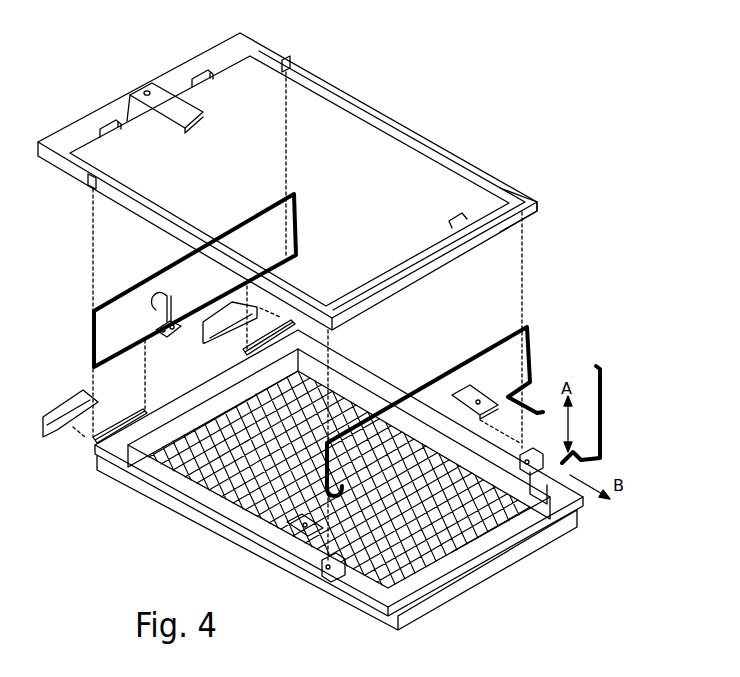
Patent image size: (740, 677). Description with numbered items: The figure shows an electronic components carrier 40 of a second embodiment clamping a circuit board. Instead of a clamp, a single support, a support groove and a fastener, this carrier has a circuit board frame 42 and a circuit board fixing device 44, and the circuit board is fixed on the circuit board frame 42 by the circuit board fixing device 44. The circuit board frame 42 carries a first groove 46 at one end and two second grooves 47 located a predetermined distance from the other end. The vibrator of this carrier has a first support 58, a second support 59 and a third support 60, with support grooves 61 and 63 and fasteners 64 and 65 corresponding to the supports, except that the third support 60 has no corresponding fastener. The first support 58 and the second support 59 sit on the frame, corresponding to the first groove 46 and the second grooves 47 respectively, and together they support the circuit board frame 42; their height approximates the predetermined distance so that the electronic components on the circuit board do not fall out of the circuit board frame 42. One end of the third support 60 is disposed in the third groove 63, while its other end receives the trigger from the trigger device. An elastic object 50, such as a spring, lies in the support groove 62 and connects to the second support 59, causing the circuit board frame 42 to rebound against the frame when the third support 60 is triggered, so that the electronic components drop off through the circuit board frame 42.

The electronic components carrier 40 is at (594, 99).
The circuit board frame 42 is at (460, 152).
The circuit board fixing device 44 is at (141, 87).
The first groove 46 is at (528, 190).
The second grooves 47 is at (290, 60).
The elastic object 50 is at (157, 330).
The first support 58 is at (530, 325).
The second support 59 is at (230, 230).
The third support 60 is at (602, 383).
The support groove 61 is at (527, 453).
The support groove 62 is at (243, 352).
The third groove 63 is at (543, 490).
The fastener 64 is at (473, 395).
The fastener 65 is at (233, 302).